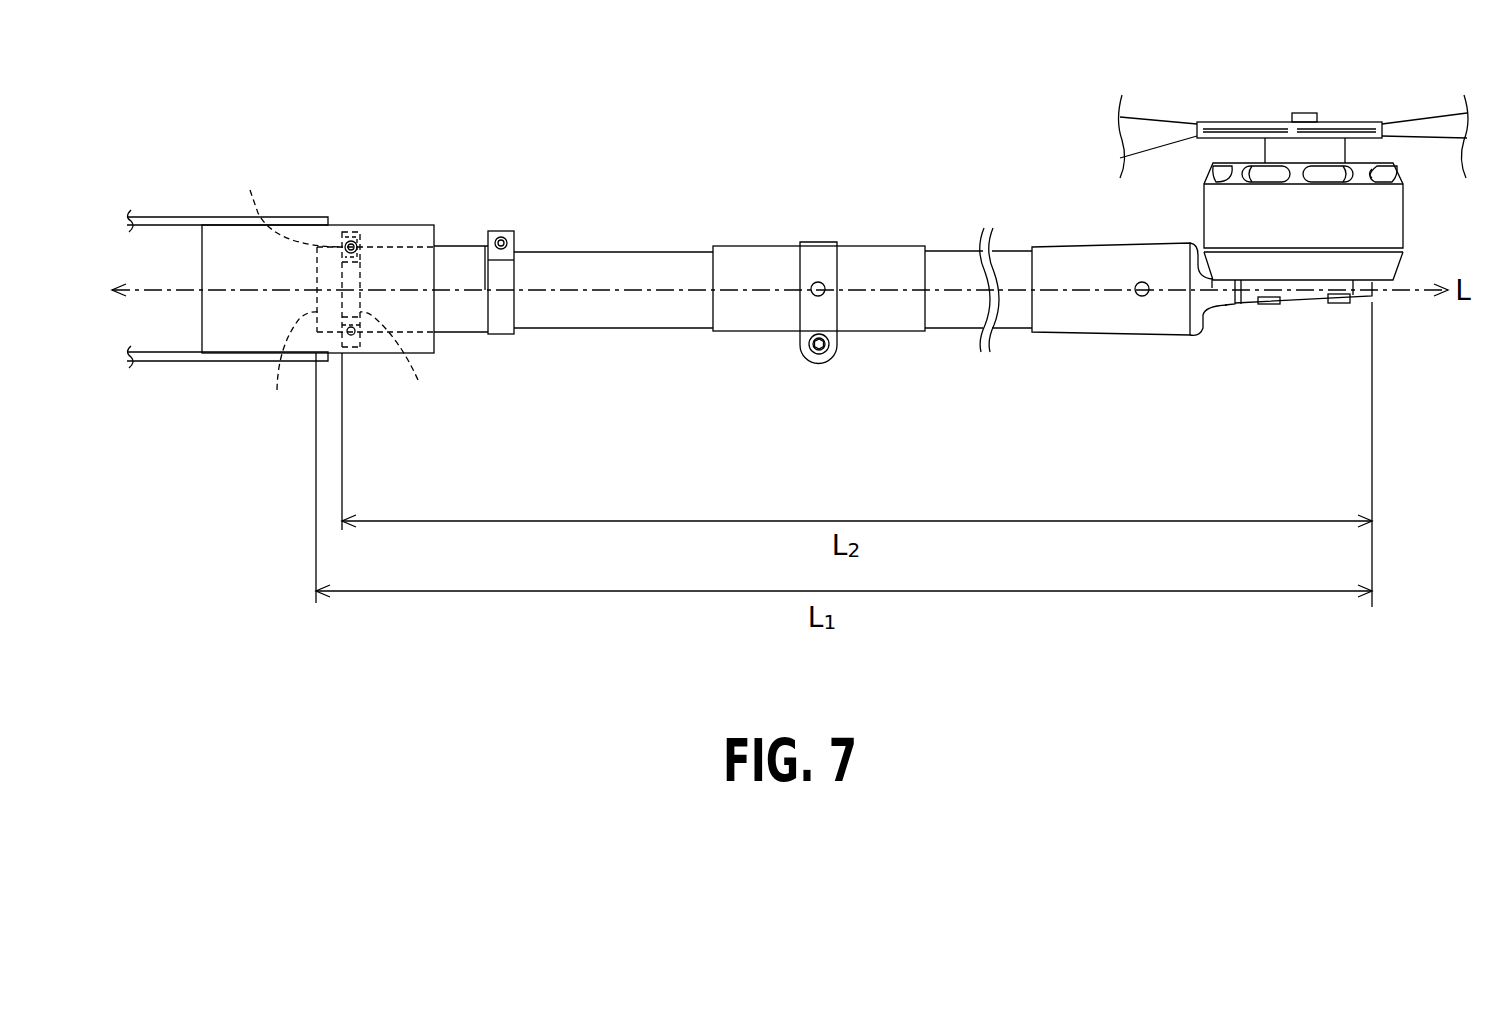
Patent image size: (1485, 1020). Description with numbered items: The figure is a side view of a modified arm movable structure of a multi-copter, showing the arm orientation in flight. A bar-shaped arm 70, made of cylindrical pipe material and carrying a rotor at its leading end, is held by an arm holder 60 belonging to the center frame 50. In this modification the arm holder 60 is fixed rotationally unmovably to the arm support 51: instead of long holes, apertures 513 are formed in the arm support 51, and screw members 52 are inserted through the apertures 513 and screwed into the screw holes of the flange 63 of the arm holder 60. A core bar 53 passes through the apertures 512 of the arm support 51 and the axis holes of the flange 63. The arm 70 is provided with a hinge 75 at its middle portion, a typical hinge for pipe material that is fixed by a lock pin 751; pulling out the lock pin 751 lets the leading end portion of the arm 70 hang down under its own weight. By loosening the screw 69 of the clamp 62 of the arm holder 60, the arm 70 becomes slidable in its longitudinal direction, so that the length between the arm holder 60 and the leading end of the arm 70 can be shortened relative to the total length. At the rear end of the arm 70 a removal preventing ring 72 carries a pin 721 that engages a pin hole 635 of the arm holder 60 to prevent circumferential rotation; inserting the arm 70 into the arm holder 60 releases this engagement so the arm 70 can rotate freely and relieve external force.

The center frame 50 is at (166, 217).
The arm support 51 is at (410, 233).
The screw member 52 is at (358, 242).
The core bar 53 is at (354, 336).
The arm holder 60 is at (470, 350).
The clamp 62 is at (507, 268).
The flange 63 is at (405, 357).
The screw 69 is at (508, 243).
The arm 70 is at (654, 345).
The removal preventing ring 72 is at (288, 363).
The hinge 75 is at (780, 350).
The aperture 512 is at (352, 336).
The aperture 513 is at (347, 238).
The pin hole 635 is at (340, 266).
The pin 721 is at (284, 202).
The lock pin 751 is at (822, 297).